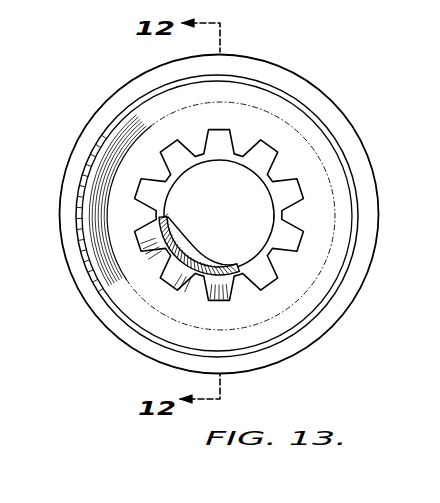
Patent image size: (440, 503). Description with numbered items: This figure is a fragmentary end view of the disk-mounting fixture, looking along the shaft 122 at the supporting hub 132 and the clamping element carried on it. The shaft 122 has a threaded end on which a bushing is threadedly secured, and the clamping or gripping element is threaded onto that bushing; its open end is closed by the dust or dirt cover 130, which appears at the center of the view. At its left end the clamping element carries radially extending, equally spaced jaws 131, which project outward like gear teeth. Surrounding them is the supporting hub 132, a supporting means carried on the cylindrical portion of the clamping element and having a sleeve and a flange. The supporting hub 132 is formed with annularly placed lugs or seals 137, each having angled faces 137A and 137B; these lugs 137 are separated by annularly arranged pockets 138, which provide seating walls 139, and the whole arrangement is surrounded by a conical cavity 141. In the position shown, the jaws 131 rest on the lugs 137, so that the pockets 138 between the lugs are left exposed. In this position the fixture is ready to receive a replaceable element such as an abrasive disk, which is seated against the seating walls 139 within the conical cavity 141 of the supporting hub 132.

The shaft 122 is at (13, 386).
The dust or dirt cover 130 is at (250, 192).
The jaws 131 is at (173, 151).
The supporting hub 132 is at (336, 327).
The lugs or seals 137 is at (138, 242).
The angled face 137A is at (151, 257).
The angled face 137B is at (141, 233).
The pockets 138 is at (158, 264).
The seating walls 139 is at (191, 284).
The conical cavity 141 is at (248, 96).